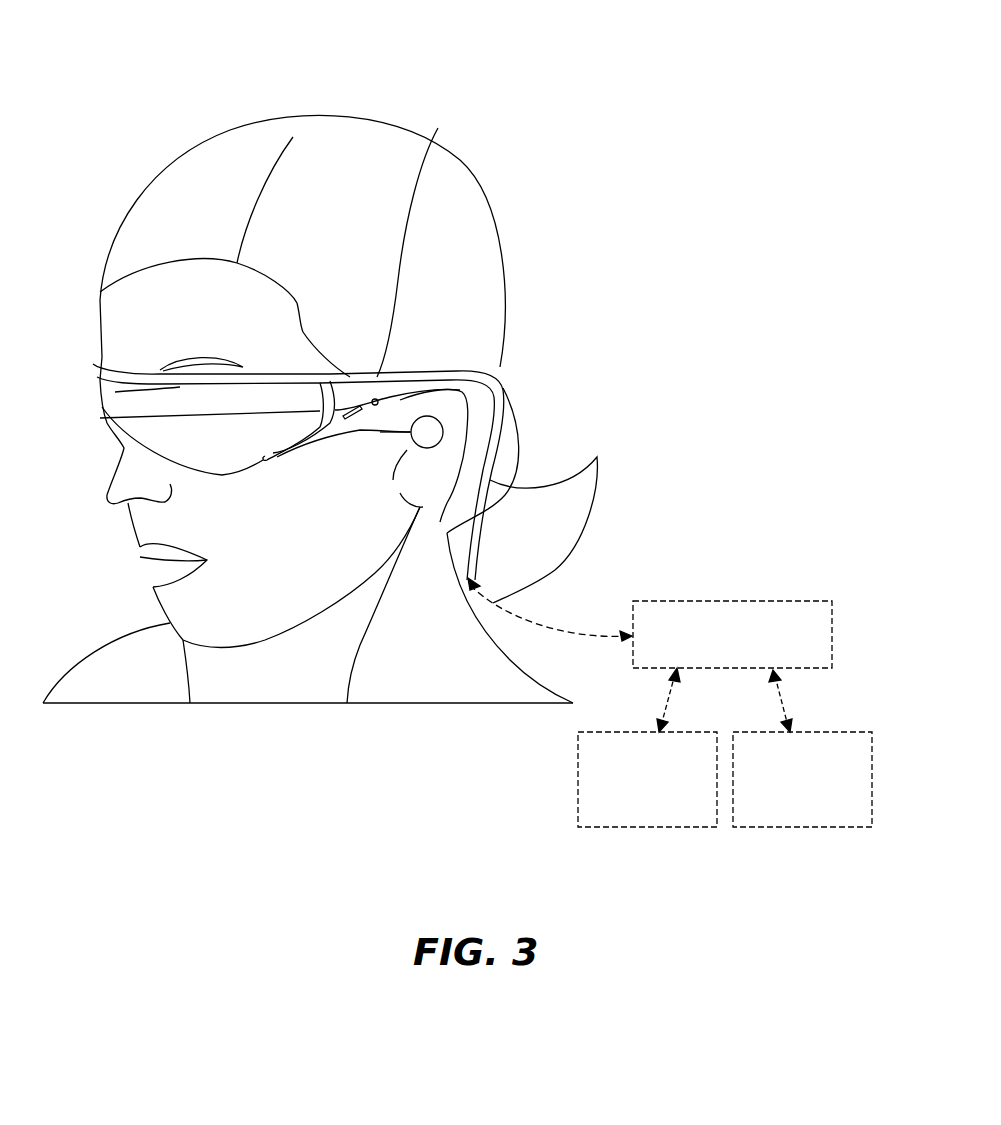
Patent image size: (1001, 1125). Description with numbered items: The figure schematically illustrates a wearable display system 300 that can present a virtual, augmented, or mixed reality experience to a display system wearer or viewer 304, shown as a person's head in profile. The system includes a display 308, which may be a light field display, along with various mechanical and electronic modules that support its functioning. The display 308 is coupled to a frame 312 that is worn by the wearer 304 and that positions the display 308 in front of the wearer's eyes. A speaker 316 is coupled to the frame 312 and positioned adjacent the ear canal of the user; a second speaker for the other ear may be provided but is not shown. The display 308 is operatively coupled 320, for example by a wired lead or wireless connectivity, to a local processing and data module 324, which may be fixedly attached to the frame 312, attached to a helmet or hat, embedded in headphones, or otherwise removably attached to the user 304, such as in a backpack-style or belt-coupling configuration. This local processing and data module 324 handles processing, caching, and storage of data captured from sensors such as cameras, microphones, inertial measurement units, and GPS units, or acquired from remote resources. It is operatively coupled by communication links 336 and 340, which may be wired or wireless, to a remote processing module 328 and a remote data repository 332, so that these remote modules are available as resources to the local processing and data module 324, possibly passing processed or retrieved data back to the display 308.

The wearable display system 300 is at (190, 68).
The wearer 304 is at (185, 162).
The display 308 is at (110, 428).
The frame 312 is at (418, 242).
The speaker 316 is at (443, 434).
The operative coupling 320 is at (550, 535).
The local processing and data module 324 is at (727, 600).
The remote processing module 328 is at (652, 827).
The remote data repository 332 is at (800, 827).
The communication link 336 is at (668, 686).
The communication link 340 is at (790, 705).